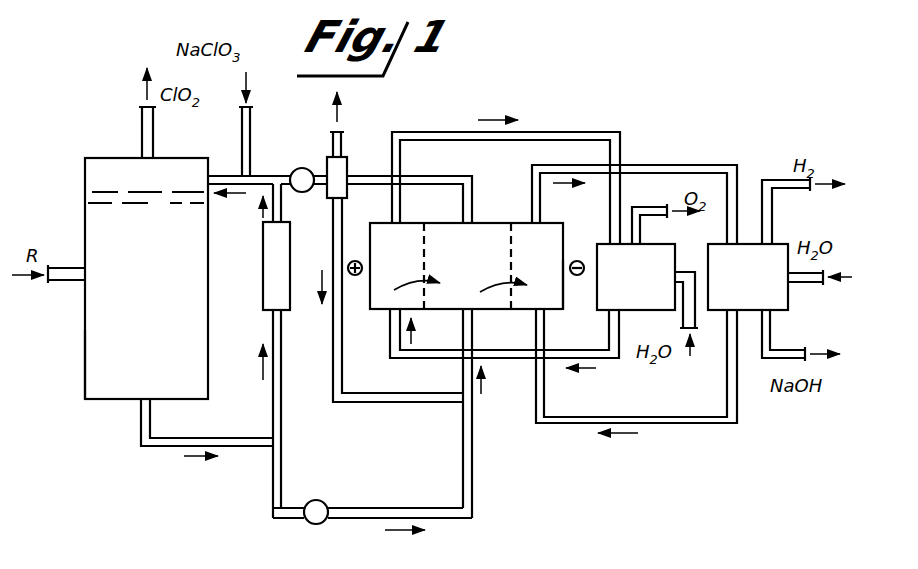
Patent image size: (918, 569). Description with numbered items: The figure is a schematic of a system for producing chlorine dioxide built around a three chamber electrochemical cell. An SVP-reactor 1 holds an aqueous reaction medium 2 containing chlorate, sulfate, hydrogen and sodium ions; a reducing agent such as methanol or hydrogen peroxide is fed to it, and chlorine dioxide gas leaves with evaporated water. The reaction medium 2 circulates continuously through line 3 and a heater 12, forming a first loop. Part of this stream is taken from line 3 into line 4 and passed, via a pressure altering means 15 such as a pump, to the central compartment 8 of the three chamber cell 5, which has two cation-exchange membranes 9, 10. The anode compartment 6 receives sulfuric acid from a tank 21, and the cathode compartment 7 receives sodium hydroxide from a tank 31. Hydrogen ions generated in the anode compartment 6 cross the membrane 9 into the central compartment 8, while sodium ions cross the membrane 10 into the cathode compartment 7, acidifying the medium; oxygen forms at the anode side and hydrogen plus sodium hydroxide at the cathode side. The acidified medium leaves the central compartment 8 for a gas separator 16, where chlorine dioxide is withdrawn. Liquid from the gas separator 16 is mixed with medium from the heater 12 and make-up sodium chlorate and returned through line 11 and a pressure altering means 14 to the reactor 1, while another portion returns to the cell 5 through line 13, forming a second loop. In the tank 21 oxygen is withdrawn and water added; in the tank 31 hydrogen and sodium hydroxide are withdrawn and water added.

The SVP-reactor 1 is at (100, 158).
The aqueous reaction medium 2 is at (84, 352).
The line 3 is at (170, 447).
The line 4 is at (370, 508).
The three chamber cell 5 is at (492, 223).
The anode compartment 6 is at (387, 305).
The cathode compartment 7 is at (556, 305).
The central compartment 8 is at (458, 235).
The cation-exchange membrane 9 is at (427, 305).
The cation-exchange membrane 10 is at (508, 305).
The line 11 is at (321, 190).
The heater 12 is at (265, 264).
The line 13 is at (400, 402).
The pressure altering means 14 is at (303, 169).
The pressure altering means 15 is at (314, 500).
The gas separator 16 is at (344, 168).
The tank 21 is at (600, 247).
The tank 31 is at (778, 246).